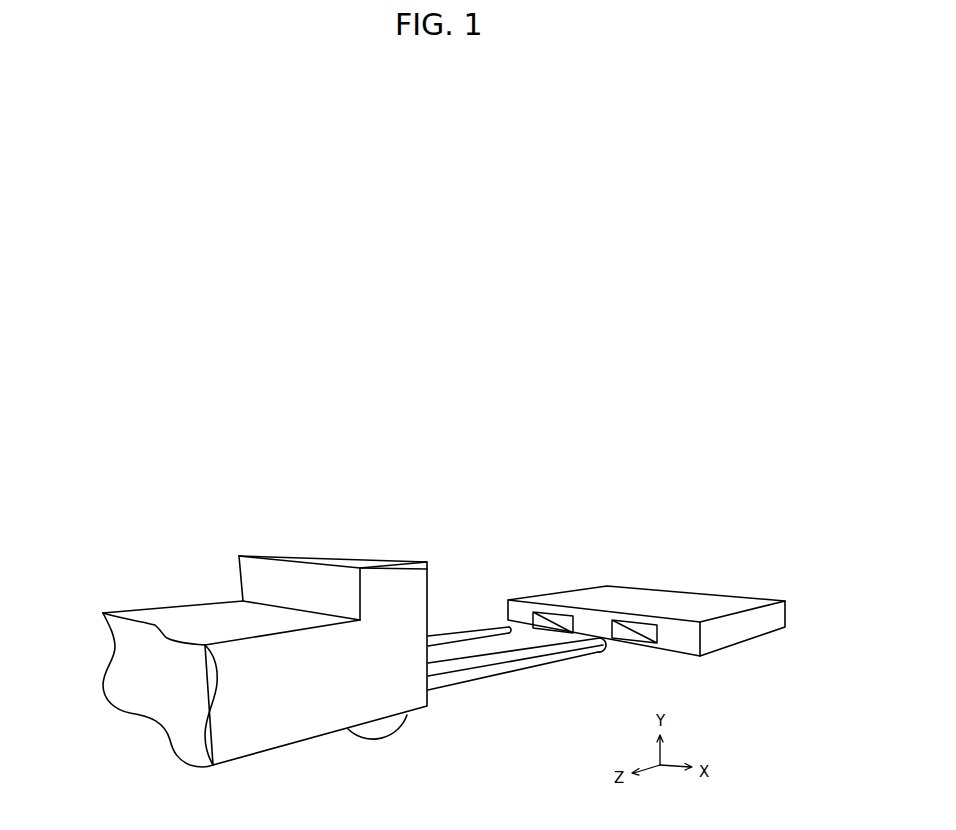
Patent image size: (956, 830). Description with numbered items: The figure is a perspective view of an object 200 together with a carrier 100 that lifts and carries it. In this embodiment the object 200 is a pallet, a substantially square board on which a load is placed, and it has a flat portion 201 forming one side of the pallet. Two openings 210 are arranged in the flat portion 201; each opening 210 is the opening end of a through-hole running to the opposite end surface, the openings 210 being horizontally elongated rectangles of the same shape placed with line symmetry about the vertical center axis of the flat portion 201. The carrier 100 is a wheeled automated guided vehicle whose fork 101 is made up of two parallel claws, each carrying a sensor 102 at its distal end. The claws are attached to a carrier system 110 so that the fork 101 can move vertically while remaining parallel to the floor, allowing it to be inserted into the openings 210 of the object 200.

The carrier 100 is at (343, 555).
The fork 101 is at (461, 628).
The sensor 102 is at (513, 600).
The carrier system 110 is at (632, 427).
The object 200 is at (758, 600).
The flat portion 201 is at (677, 640).
The opening 210 is at (555, 611).